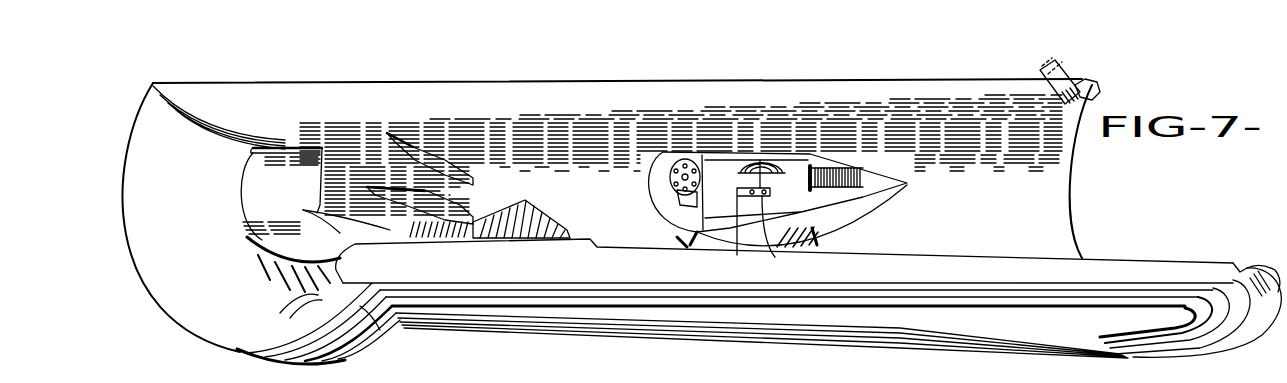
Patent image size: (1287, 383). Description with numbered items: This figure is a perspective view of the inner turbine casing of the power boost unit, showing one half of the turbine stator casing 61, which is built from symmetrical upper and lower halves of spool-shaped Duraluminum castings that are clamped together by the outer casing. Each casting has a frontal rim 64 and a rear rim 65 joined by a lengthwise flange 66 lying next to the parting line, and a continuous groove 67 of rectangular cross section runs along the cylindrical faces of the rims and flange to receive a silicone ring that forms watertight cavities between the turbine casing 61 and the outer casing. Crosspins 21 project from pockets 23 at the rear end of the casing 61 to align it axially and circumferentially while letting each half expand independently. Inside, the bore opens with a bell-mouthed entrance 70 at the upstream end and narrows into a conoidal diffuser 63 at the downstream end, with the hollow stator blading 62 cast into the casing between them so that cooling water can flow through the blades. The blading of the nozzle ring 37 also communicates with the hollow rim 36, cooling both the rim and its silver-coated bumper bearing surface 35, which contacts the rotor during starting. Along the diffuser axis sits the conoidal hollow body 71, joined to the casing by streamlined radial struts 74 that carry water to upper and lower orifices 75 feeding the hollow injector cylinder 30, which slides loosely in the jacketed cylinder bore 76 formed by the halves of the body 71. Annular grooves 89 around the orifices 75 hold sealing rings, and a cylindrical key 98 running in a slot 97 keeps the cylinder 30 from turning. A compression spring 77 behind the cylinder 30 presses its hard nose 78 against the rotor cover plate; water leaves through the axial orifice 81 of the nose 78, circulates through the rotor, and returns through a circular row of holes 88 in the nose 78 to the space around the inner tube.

The crosspins 21 is at (1062, 67).
The pockets 23 is at (1090, 80).
The injector cylinder 30 is at (756, 189).
The bumper bearing surface 35 is at (252, 177).
The rim 36 is at (255, 152).
The nozzle ring 37 is at (270, 262).
The turbine stator casing 61 is at (893, 338).
The stator blading 62 is at (568, 230).
The conoidal diffuser 63 is at (984, 231).
The frontal rims 64 is at (355, 340).
The rear rims 65 is at (1245, 323).
The lengthwise flanges 66 is at (532, 272).
The continuous groove 67 is at (360, 306).
The bell-mouthed entrance 70 is at (171, 222).
The conoidal hollow body 71 is at (885, 200).
The streamlined radial struts 74 is at (813, 240).
The orifices 75 is at (773, 201).
The jacketed cylinder bore 76 is at (788, 201).
The compression spring 77 is at (870, 172).
The hard nose 78 is at (715, 190).
The axial orifice 81 is at (676, 187).
The holes 88 is at (684, 198).
The annular grooves 89 is at (707, 180).
The slot 97 is at (733, 234).
The cylindrical key 98 is at (778, 234).